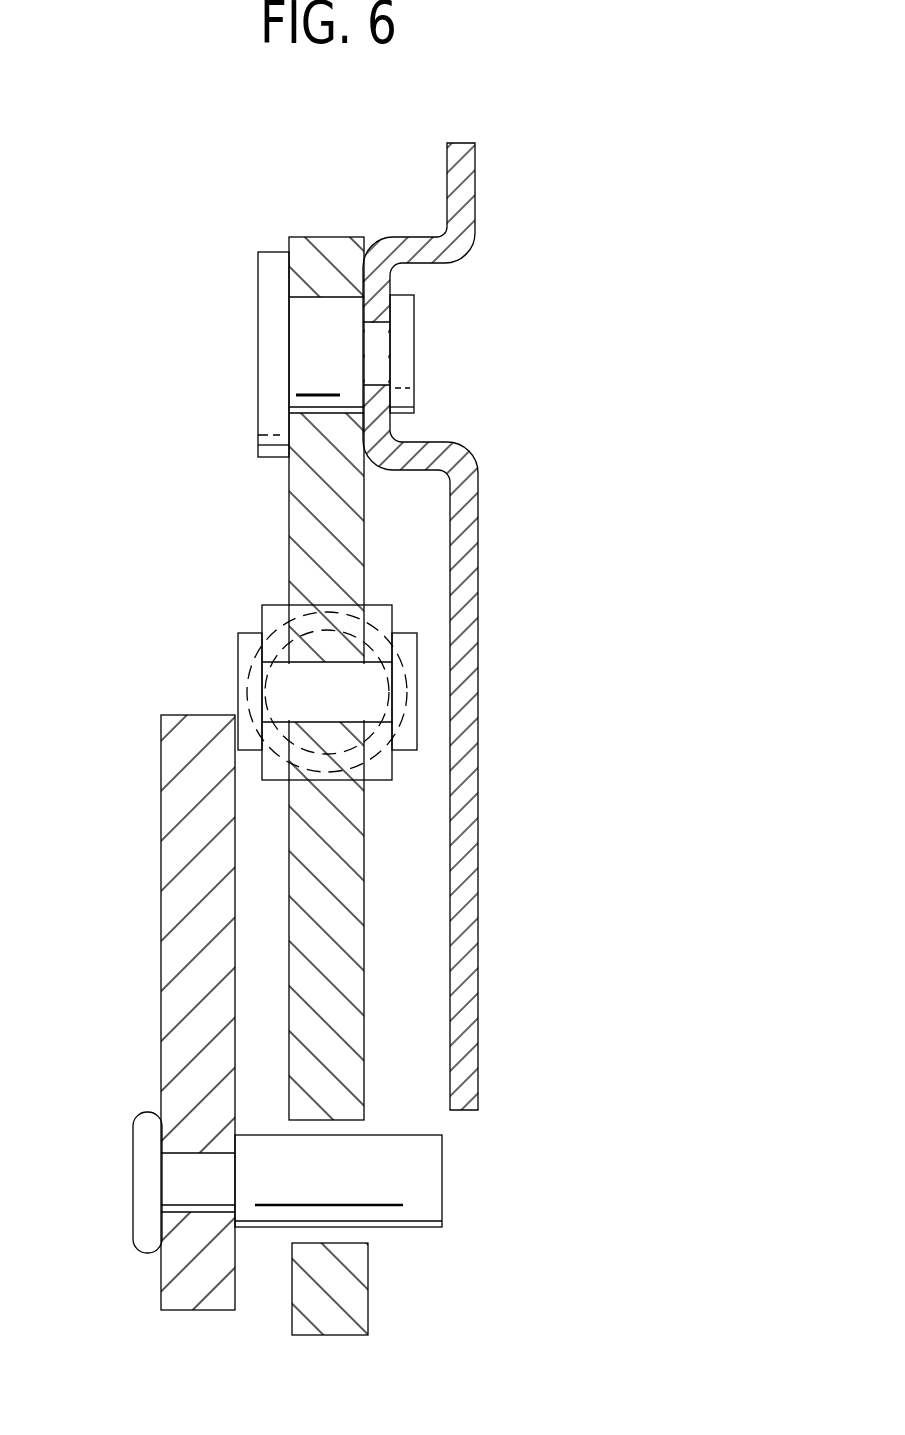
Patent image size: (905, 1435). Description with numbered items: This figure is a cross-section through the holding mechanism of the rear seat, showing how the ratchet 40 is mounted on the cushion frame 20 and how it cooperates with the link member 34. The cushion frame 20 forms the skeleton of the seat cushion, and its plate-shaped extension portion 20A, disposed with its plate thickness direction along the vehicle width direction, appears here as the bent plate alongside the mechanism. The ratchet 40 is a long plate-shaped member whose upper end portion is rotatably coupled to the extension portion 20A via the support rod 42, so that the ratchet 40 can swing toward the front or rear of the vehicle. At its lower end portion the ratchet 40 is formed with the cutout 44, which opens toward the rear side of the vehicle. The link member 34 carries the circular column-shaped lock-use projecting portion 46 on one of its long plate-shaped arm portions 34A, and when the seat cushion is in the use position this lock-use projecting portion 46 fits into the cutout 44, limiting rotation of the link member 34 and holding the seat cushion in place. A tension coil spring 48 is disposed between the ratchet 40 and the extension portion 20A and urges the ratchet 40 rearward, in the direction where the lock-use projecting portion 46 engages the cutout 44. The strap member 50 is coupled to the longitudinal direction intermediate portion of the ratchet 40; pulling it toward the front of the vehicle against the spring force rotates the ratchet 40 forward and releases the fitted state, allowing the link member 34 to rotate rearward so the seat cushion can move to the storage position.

The cushion frame 20 is at (478, 980).
The extension portion 20A is at (478, 906).
The link member 34 is at (161, 904).
The arm portion 34A is at (161, 1035).
The ratchet 40 is at (289, 501).
The support rod 42 is at (414, 353).
The cutout 44 is at (330, 1243).
The lock-use projecting portion 46 is at (442, 1178).
The tension coil spring 48 is at (395, 658).
The strap member 50 is at (262, 604).